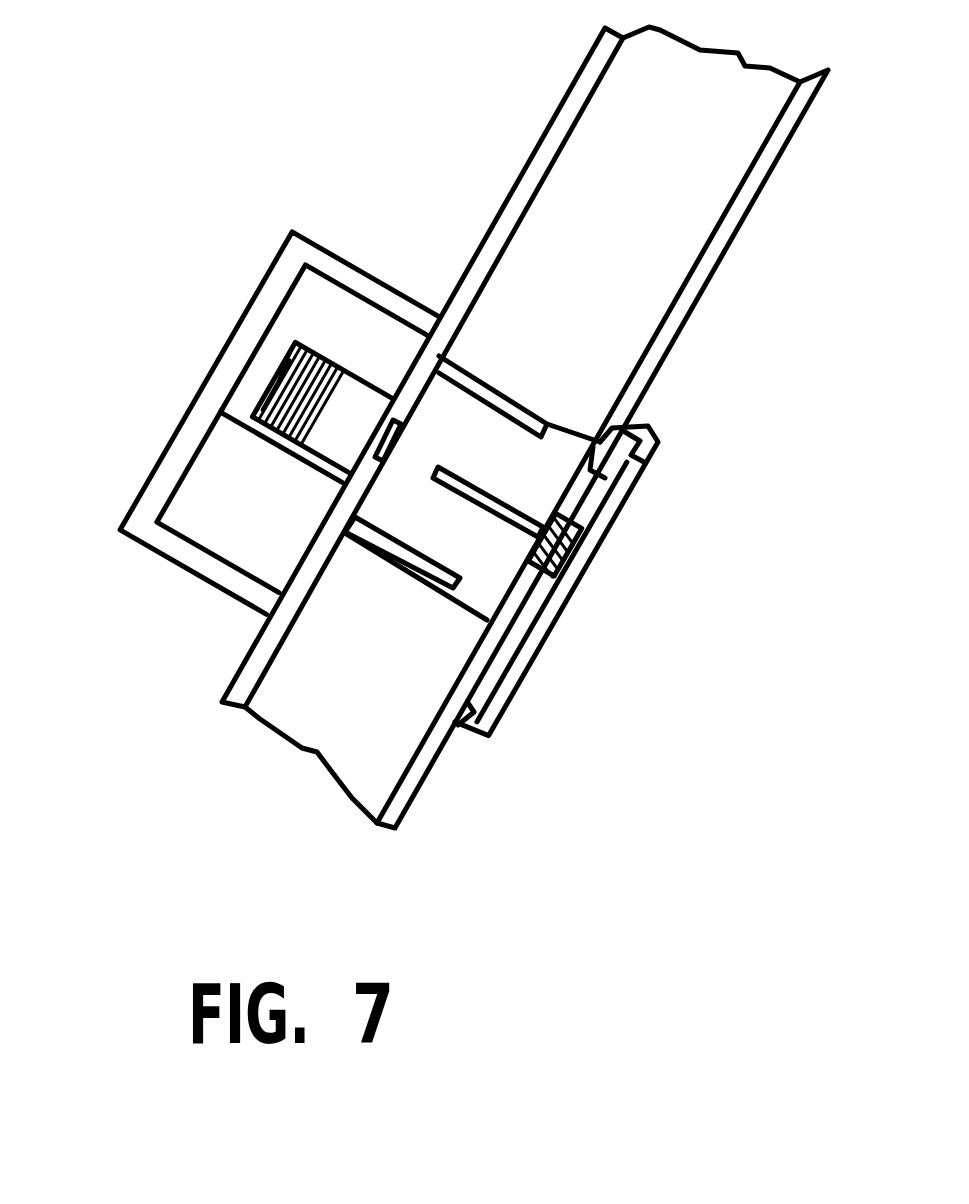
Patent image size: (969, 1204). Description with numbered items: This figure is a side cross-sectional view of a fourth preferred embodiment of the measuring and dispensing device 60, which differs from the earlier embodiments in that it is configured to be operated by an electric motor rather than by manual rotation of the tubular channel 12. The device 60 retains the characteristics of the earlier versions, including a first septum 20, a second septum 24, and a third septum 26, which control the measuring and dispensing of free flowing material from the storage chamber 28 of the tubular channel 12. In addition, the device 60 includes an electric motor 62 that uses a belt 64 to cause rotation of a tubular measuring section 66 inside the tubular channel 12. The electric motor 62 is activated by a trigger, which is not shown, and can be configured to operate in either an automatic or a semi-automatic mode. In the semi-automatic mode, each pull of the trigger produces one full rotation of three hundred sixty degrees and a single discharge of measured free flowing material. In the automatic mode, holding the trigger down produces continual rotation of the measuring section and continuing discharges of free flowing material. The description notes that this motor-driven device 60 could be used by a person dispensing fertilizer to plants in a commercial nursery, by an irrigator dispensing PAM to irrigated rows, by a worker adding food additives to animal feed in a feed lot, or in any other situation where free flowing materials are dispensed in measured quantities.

The tubular channel 12 is at (525, 427).
The first septum 20 is at (505, 395).
The second septum 24 is at (482, 494).
The third septum 26 is at (412, 548).
The storage chamber 28 is at (587, 138).
The measuring and dispensing device 60 is at (168, 272).
The electric motor 62 is at (190, 520).
The belt 64 is at (360, 408).
The tubular measuring section 66 is at (563, 445).